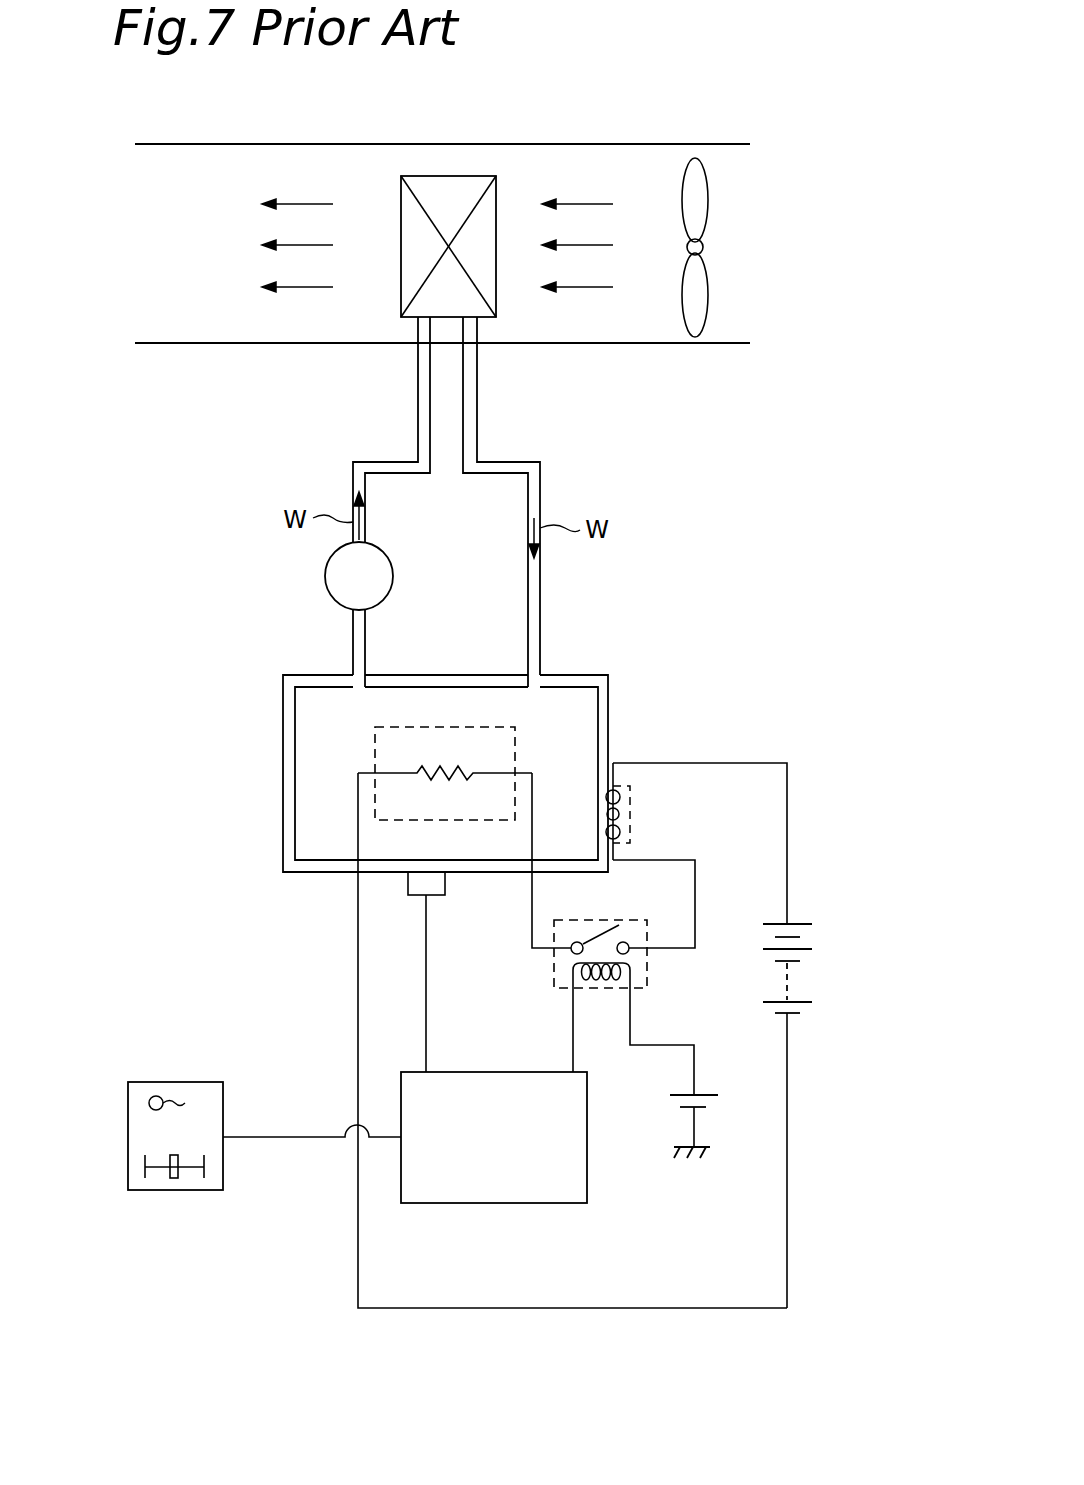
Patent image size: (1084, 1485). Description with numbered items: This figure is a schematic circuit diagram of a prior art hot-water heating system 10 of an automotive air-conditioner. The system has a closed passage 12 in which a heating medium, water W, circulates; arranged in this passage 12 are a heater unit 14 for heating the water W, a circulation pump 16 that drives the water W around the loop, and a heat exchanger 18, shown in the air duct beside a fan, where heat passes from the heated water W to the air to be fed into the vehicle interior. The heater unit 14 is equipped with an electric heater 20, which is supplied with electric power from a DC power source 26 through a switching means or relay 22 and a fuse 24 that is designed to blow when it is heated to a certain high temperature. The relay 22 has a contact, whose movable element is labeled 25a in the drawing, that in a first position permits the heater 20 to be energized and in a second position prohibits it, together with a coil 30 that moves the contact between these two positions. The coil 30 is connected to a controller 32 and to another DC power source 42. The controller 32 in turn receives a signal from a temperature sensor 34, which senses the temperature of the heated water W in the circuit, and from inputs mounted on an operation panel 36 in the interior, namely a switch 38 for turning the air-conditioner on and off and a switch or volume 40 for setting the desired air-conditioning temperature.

The hot-water heating system 10 is at (758, 746).
The closed passage 12 is at (540, 600).
The heater unit 14 is at (625, 705).
The circulation pump 16 is at (325, 578).
The heat exchanger 18 is at (401, 207).
The electric heater 20 is at (480, 727).
The relay 22 is at (624, 978).
The fuse 24 is at (633, 805).
The relay contact 25a is at (627, 940).
The DC power source 26 is at (805, 962).
The coil 30 is at (600, 985).
The controller 32 is at (492, 1205).
The temperature sensor 34 is at (414, 896).
The operation panel 36 is at (138, 1109).
The switch 38 is at (156, 1095).
The switch or volume 40 is at (145, 1165).
The DC power source 42 is at (705, 1090).